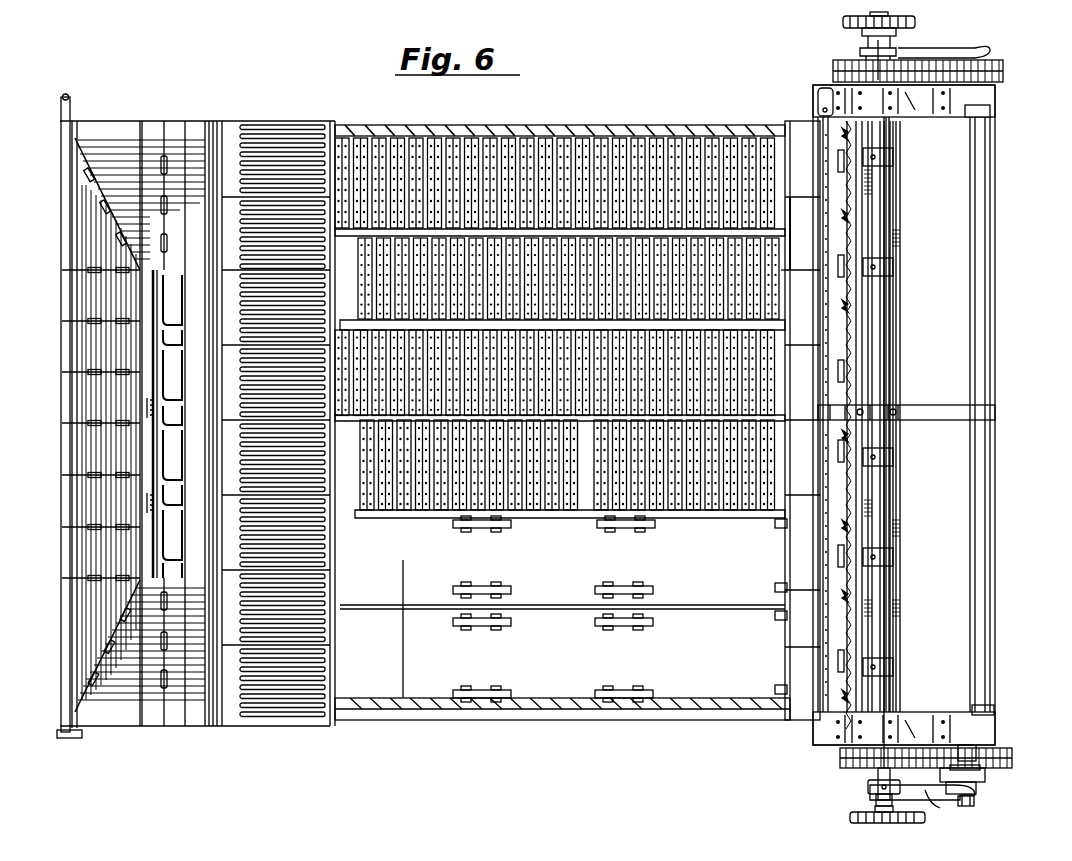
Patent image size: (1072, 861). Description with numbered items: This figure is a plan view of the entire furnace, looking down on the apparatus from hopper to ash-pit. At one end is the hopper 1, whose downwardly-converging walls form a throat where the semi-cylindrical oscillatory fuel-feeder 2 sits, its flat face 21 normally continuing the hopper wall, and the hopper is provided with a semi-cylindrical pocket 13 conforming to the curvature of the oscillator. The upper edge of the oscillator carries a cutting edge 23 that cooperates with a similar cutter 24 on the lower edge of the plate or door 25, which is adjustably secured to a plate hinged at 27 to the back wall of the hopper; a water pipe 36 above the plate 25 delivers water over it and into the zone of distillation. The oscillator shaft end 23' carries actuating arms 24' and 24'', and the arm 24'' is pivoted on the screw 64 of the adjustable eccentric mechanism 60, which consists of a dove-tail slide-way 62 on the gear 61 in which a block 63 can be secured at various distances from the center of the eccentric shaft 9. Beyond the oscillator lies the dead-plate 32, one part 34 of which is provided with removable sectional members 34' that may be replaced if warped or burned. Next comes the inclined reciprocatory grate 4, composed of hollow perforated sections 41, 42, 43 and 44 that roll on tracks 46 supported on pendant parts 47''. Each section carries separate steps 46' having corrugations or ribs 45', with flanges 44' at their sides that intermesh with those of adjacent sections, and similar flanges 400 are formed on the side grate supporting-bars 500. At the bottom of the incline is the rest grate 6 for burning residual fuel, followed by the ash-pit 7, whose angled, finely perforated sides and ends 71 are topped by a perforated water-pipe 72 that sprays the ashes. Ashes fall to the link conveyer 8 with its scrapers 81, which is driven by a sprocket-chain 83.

The hopper 1 is at (970, 360).
The oscillatory fuel-feeder 2 is at (890, 335).
The inclined reciprocatory multi-part grate 4 is at (517, 138).
The rest grate 6 is at (276, 150).
The ash-pit 7 is at (150, 390).
The conveyer 8 is at (185, 445).
The eccentric shaft 9 is at (975, 745).
The semi-cylindrical pocket 13 is at (900, 432).
The flat face of oscillator 21 is at (895, 390).
The cutting edge 23 is at (954, 416).
The end of oscillator shaft 23' is at (852, 458).
The cutter 24 is at (941, 415).
The actuating-arm 24' is at (867, 801).
The actuating-arm 24'' is at (948, 808).
The plate or door 25 is at (848, 202).
The hinge 27 is at (840, 158).
The dead-plate 32 is at (798, 122).
The dead-plate part 34 is at (776, 403).
The removable sectional member 34' is at (803, 443).
The water pipe or passage 36 is at (836, 190).
The grate section 41 is at (594, 142).
The grate section 42 is at (796, 272).
The grate section 43 is at (558, 373).
The grate section 44 is at (567, 484).
The flanges 44' is at (548, 322).
The corrugations or ribs 45' is at (563, 156).
The tracks 46 is at (614, 609).
The steps 46' is at (612, 322).
The pendant parts 47'' is at (562, 629).
The adjustable eccentric mechanism 60 is at (942, 791).
The gear 61 is at (1012, 757).
The dove-tail slide-way 62 is at (942, 773).
The block 63 is at (982, 773).
The screw 64 is at (975, 802).
The sides and ends of ash-pit 71 is at (142, 148).
The perforated water-pipe 72 is at (60, 103).
The scrapers 81 is at (160, 496).
The sprocket-chain 83 is at (845, 22).
The flanges 400 is at (488, 135).
The side grate supporting-bars 500 is at (402, 124).